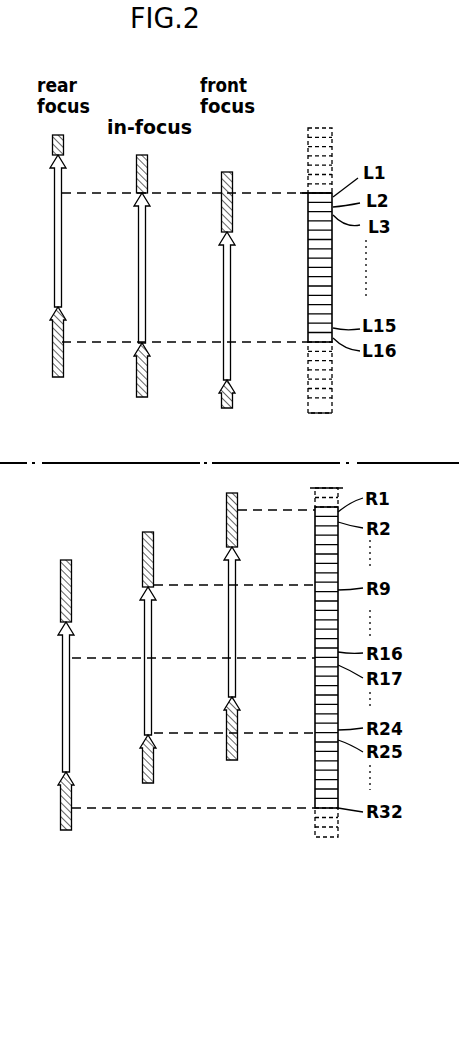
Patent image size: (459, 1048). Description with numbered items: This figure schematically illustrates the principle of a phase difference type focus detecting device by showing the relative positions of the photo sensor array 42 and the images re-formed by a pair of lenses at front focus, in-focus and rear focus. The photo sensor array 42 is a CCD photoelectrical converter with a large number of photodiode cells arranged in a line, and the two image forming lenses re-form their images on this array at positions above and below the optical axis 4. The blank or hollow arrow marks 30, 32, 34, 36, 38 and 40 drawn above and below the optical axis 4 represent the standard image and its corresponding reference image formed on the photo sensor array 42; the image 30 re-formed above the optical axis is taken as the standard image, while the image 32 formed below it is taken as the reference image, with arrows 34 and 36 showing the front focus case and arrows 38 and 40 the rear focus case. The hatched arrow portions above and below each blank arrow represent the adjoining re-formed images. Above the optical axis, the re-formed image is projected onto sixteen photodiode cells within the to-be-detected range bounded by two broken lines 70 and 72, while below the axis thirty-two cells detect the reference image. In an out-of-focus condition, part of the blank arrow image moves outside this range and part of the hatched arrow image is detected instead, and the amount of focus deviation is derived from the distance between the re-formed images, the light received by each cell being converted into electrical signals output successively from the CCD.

The optical axis 4 is at (400, 463).
The standard image 30 is at (146, 240).
The reference image 32 is at (155, 690).
The front focus standard image 34 is at (232, 272).
The front focus reference image 36 is at (238, 677).
The rear focus standard image 38 is at (53, 300).
The rear focus reference image 40 is at (60, 735).
The photo sensor array 42 is at (333, 140).
The broken line 70 is at (265, 193).
The broken line 72 is at (283, 344).